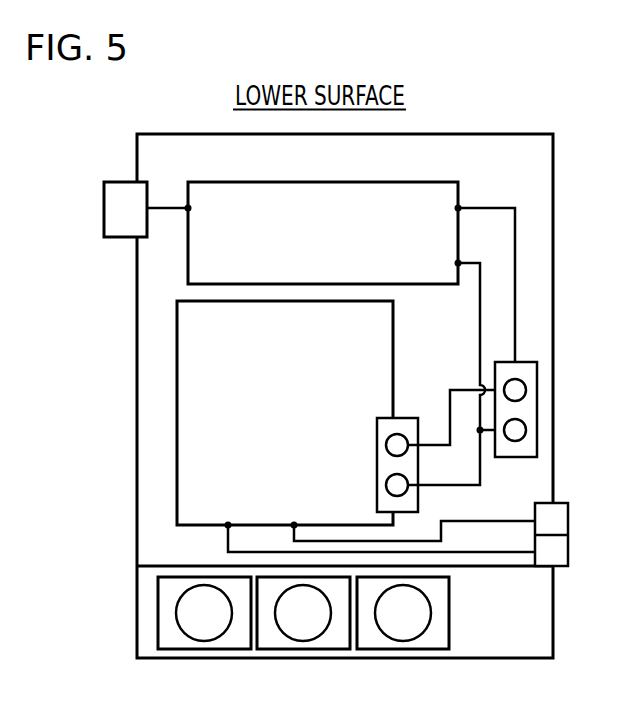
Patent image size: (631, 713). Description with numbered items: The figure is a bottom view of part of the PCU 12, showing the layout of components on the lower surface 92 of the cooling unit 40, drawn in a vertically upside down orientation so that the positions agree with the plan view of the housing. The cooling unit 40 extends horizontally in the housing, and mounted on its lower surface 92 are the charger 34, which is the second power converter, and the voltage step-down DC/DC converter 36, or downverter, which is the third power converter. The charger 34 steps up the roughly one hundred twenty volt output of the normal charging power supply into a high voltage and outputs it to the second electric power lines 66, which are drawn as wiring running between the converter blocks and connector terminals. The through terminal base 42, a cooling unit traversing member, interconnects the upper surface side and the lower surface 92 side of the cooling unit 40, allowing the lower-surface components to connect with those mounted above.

The PCU 12 is at (81, 140).
The lower surface 92 is at (537, 167).
The voltage step-down DC/DC converter 36 is at (272, 182).
The charger 34 is at (175, 404).
The second electric power lines 66 is at (515, 293).
The through terminal base 42 is at (537, 410).
The cooling unit 40 is at (553, 471).